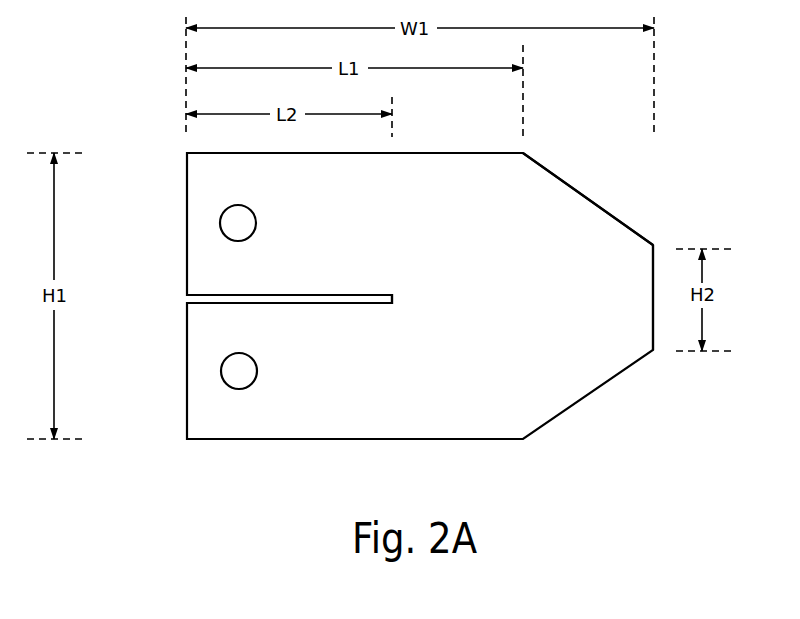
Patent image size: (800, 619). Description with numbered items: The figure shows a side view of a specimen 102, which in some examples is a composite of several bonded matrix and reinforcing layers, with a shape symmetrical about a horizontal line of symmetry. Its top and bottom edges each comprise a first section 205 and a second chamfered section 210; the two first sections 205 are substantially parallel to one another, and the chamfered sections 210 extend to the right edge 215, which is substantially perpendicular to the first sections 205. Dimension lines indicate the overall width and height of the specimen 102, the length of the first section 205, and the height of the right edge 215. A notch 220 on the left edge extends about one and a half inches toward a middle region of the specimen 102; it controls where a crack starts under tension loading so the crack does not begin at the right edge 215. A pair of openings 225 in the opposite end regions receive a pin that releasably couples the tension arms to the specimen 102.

The specimen 102 is at (607, 246).
The first section 205 is at (461, 152).
The second chamfered section 210 is at (580, 193).
The right edge 215 is at (655, 342).
The notch 220 is at (178, 301).
The openings 225 is at (220, 224).